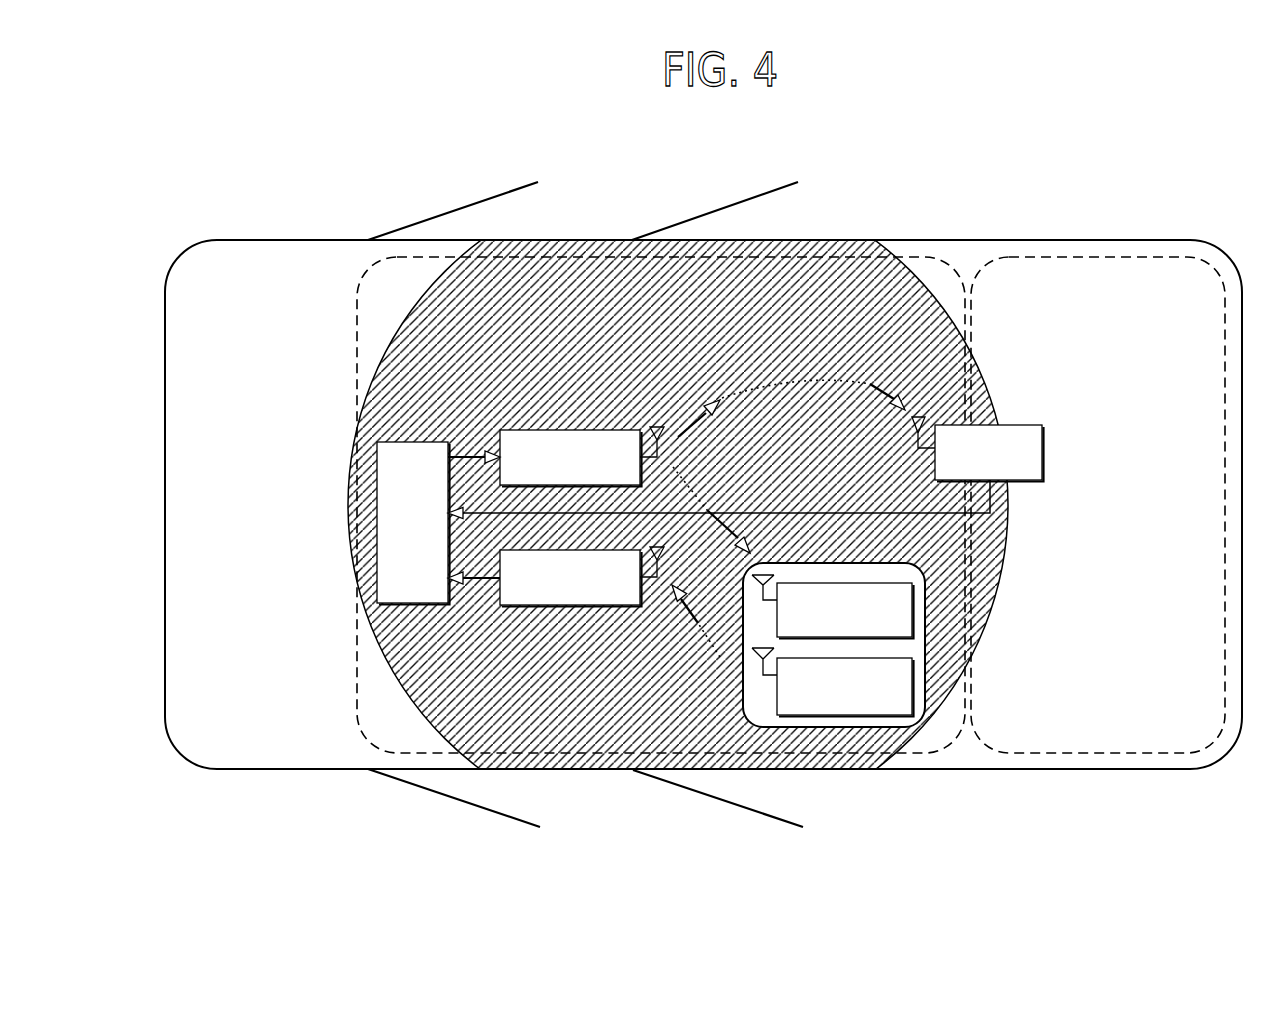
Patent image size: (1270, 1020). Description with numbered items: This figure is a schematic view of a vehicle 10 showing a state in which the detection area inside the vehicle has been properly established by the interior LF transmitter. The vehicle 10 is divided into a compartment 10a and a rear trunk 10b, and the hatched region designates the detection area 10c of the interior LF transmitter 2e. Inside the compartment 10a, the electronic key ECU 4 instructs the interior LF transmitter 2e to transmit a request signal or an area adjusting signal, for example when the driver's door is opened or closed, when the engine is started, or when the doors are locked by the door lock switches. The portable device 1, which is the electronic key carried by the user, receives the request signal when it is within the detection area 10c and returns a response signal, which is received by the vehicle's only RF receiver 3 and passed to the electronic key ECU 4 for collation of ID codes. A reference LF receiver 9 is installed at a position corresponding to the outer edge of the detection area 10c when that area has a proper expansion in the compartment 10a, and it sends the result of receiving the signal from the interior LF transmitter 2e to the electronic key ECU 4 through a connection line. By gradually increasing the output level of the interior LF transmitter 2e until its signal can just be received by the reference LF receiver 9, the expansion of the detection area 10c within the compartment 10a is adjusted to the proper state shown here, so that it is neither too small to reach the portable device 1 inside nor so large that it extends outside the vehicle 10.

The vehicle 10 is at (287, 240).
The compartment 10a is at (927, 258).
The rear trunk 10b is at (1113, 257).
The detection area 10c is at (827, 247).
The interior LF transmitter 2e is at (533, 430).
The electronic key ECU 4 is at (377, 483).
The RF receiver 3 is at (520, 606).
The reference LF receiver 9 is at (1042, 450).
The portable device 1 is at (925, 657).